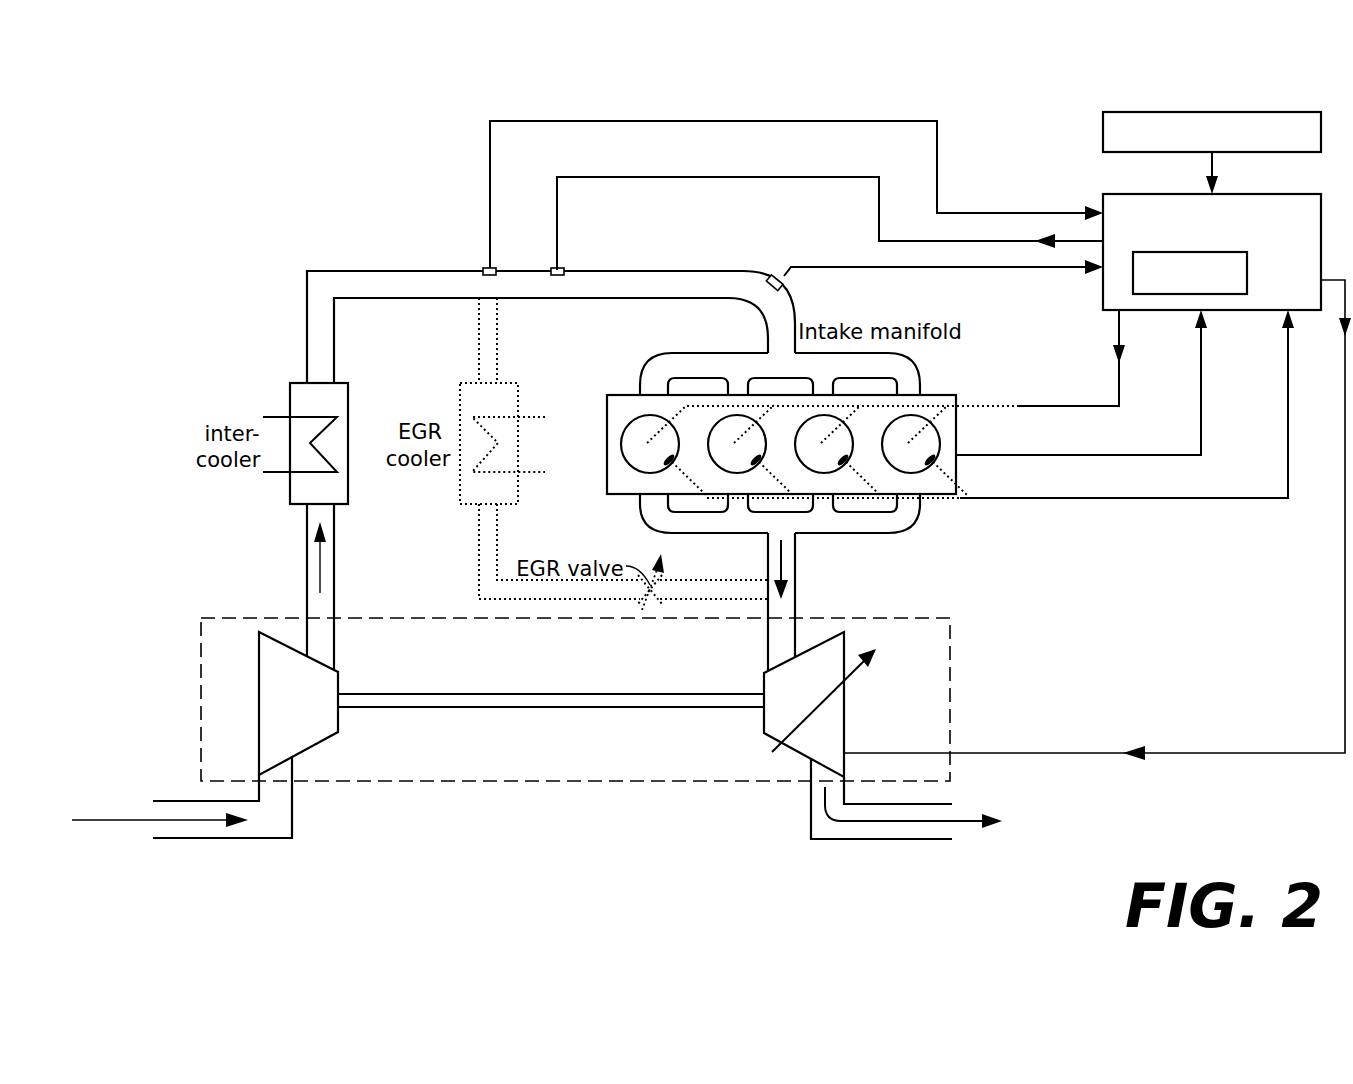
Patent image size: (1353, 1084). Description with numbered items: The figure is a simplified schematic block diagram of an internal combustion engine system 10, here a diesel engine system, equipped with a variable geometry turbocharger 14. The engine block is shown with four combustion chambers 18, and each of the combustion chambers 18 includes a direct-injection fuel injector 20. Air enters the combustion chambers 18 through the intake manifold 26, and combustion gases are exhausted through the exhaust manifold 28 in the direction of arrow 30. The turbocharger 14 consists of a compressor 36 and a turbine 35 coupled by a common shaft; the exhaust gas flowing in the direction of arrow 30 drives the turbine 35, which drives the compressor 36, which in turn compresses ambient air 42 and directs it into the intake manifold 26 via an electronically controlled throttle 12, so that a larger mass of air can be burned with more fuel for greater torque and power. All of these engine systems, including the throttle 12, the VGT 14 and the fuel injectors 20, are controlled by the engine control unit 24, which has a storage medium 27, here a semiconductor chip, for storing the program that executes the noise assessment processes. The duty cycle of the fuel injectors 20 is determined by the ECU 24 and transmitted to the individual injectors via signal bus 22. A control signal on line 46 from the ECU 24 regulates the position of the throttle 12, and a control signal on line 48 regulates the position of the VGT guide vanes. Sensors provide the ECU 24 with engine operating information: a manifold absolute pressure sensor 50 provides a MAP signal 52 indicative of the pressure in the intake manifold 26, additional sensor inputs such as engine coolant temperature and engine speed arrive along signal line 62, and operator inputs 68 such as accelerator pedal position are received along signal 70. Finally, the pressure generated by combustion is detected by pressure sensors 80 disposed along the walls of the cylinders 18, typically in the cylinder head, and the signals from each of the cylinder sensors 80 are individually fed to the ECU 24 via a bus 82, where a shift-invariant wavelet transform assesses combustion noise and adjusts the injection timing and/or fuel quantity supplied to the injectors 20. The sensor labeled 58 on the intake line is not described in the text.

The internal combustion engine system 10 is at (420, 138).
The electronically controlled throttle 12 is at (560, 267).
The variable geometry turbocharger 14 is at (950, 692).
The combustion chambers 18 is at (909, 456).
The direct-injection fuel injector 20 is at (744, 408).
The signal bus 22 is at (1119, 392).
The engine control unit 24 is at (1270, 194).
The intake manifold 26 is at (650, 278).
The storage medium 27 is at (1247, 272).
The exhaust manifold 28 is at (826, 527).
The exhaust gas flow direction arrow 30 is at (768, 573).
The turbine 35 is at (845, 724).
The compressor 36 is at (258, 716).
The ambient air 42 is at (182, 797).
The throttle control signal line 46 is at (620, 176).
The VGT control signal line 48 is at (320, 574).
The manifold absolute pressure sensor 50 is at (770, 280).
The MAP signal 52 is at (847, 267).
The intake temperature sensor 58 is at (486, 267).
The signal line 62 is at (1201, 415).
The operator inputs 68 is at (1260, 112).
The operator input signal 70 is at (1210, 173).
The pressure sensors 80 is at (756, 462).
The bus 82 is at (1288, 428).